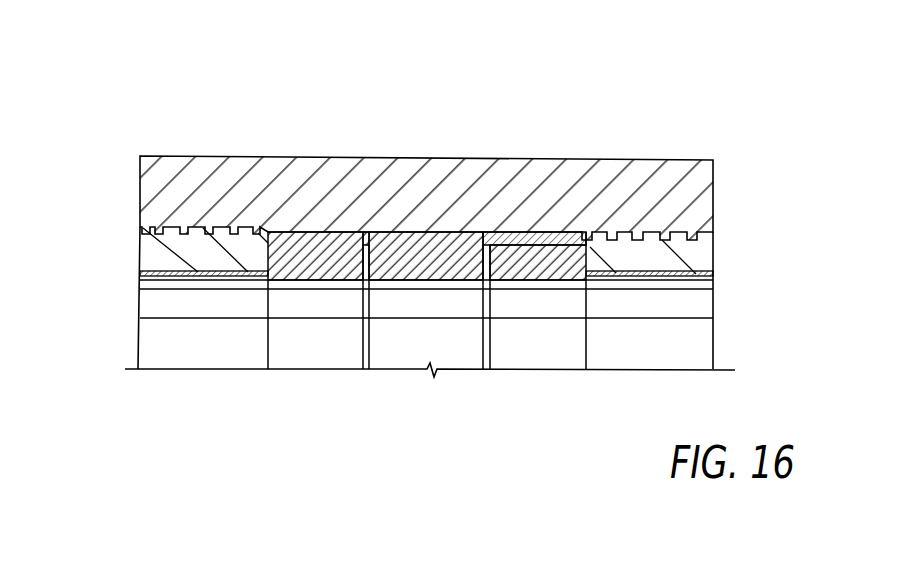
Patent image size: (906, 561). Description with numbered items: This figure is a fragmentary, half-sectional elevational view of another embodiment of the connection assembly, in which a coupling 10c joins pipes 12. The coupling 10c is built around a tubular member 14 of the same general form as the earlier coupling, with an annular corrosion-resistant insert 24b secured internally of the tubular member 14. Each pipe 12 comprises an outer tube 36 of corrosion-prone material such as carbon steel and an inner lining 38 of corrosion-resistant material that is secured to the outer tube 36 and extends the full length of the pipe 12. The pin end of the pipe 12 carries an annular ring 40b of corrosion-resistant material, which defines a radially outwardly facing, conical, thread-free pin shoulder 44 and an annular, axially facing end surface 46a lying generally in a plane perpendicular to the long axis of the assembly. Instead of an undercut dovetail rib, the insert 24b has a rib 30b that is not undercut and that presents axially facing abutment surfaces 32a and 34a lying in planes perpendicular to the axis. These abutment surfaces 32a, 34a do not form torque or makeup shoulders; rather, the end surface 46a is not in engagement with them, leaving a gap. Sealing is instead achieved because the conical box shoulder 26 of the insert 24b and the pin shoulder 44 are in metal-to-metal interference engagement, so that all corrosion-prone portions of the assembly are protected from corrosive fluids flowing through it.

The coupling 10c is at (434, 121).
The pipe 12 is at (124, 241).
The tubular member 14 is at (615, 178).
The insert 24b is at (425, 289).
The box shoulder 26 is at (315, 250).
The rib 30b is at (417, 250).
The abutment surface 32a is at (349, 247).
The abutment surface 34a is at (508, 234).
The outer tube 36 is at (155, 257).
The lining 38 is at (163, 292).
The annular ring 40b is at (302, 270).
The pin shoulder 44 is at (540, 238).
The end surface 46a is at (372, 272).